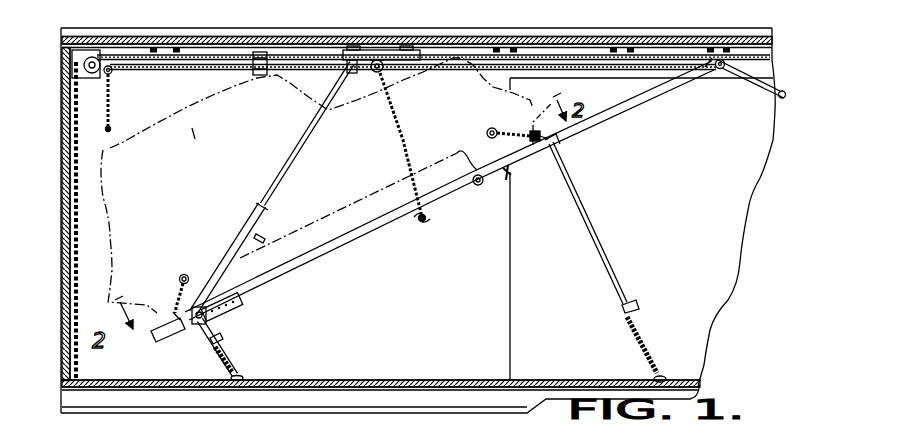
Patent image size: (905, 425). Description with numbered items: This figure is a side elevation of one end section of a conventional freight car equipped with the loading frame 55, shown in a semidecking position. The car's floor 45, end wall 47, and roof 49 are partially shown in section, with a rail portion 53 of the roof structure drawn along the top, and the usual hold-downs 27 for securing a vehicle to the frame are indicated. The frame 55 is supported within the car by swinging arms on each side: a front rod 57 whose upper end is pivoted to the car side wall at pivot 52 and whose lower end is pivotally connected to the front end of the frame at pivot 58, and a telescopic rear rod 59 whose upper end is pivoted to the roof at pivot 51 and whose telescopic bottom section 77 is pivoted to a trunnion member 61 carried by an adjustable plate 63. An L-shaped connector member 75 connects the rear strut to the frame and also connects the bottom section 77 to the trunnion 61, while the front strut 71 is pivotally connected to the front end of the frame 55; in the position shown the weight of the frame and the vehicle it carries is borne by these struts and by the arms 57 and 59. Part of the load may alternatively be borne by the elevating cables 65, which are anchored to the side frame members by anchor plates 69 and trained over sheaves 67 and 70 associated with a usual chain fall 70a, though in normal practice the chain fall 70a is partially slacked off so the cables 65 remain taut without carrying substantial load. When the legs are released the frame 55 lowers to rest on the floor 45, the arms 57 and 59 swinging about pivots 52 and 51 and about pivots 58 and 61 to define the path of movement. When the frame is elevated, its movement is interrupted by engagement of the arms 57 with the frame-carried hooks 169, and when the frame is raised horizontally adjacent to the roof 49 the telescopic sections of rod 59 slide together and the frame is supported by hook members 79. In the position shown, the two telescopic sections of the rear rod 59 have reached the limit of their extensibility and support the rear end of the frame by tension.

The hold-downs 27 is at (508, 131).
The floor 45 is at (402, 378).
The end wall 47 is at (63, 312).
The roof 49 is at (215, 42).
The pivot 51 is at (360, 48).
The pivot 52 is at (722, 58).
The top rail 53 is at (437, 48).
The loading frame 55 is at (370, 237).
The front rod 57 is at (629, 112).
The pivot 58 is at (478, 186).
The rear rod 59 is at (297, 152).
The trunnion member 61 is at (173, 341).
The adjustable plate 63 is at (235, 306).
The elevating cable 65 is at (411, 129).
The sheave 67 is at (382, 74).
The anchor plate 69 is at (428, 222).
The sheave 70 is at (96, 54).
The chain fall 70a is at (78, 153).
The front strut 71 is at (598, 243).
The L-shaped connector member 75 is at (199, 331).
The telescopic bottom section 77 is at (267, 208).
The hook member 79 is at (270, 76).
The hook 169 is at (511, 176).